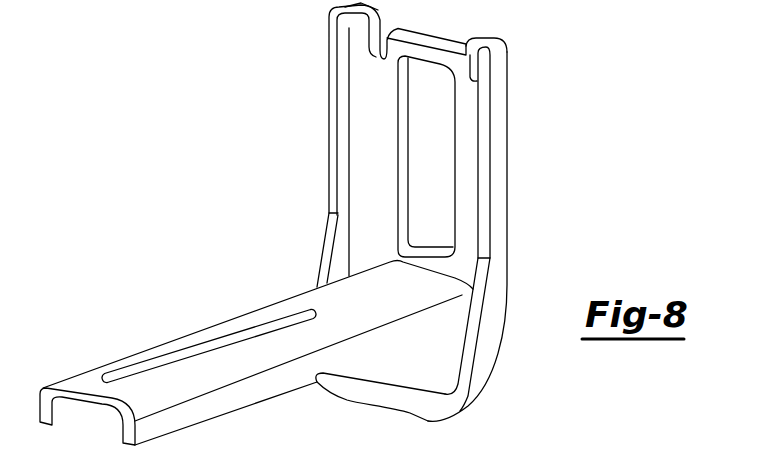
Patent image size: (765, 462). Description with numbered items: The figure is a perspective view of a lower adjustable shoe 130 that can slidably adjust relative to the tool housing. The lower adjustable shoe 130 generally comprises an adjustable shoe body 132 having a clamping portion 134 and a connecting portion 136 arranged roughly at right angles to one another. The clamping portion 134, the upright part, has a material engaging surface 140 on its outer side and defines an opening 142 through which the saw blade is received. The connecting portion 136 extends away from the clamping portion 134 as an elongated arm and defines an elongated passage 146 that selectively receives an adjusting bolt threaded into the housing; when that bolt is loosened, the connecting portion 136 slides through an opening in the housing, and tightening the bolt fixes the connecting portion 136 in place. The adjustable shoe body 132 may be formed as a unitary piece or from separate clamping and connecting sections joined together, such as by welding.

The lower adjustable shoe 130 is at (566, 185).
The adjustable shoe body 132 is at (487, 358).
The clamping portion 134 is at (495, 110).
The connecting portion 136 is at (207, 403).
The material engaging surface 140 is at (508, 222).
The opening 142 is at (417, 137).
The elongated passage 146 is at (173, 360).